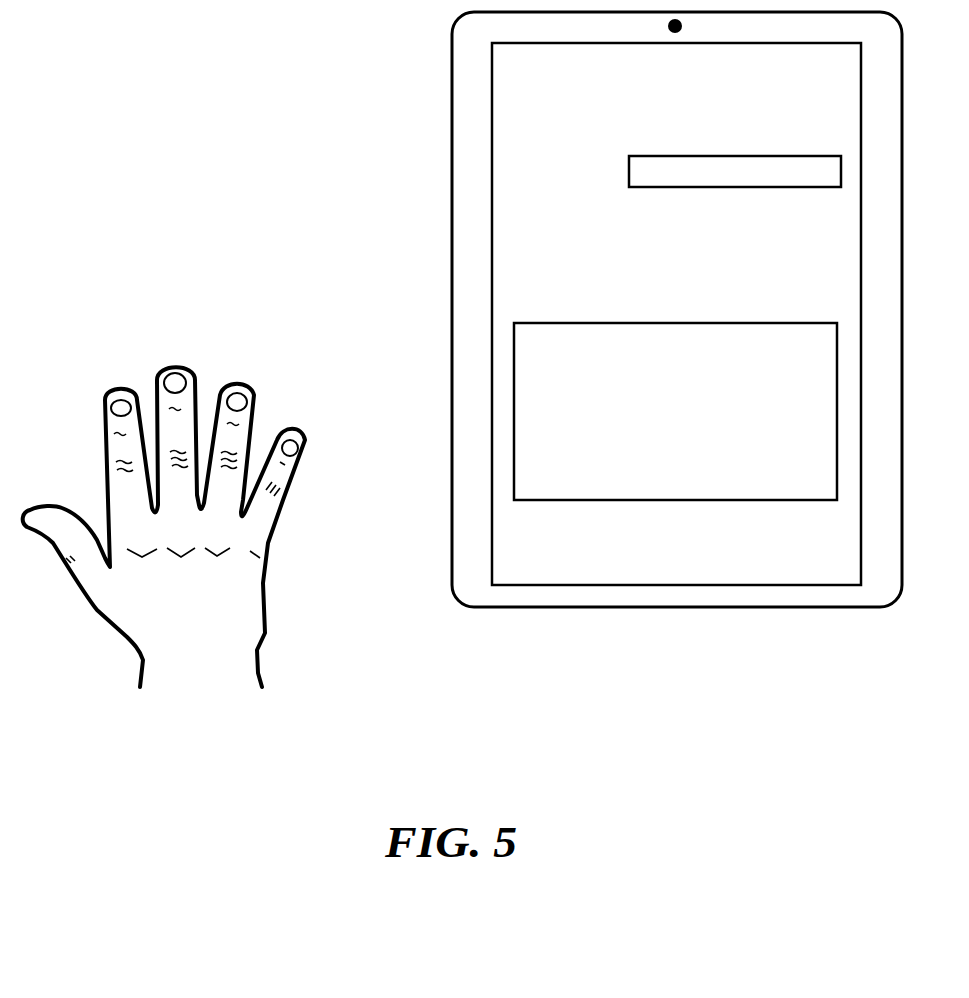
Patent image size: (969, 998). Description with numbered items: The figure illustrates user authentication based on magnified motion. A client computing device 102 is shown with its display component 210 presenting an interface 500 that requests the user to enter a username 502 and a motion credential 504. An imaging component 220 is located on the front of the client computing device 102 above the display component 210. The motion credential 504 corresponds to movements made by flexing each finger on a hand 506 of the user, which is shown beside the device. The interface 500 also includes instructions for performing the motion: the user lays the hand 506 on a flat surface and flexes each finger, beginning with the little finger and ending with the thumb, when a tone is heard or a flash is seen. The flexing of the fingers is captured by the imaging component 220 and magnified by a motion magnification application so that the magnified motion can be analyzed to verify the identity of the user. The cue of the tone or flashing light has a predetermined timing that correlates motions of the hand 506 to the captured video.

The client computing device 102 is at (452, 23).
The display component 210 is at (492, 78).
The imaging component 220 is at (682, 26).
The interface 500 is at (677, 277).
The username 502 is at (644, 155).
The motion credential 504 is at (771, 322).
The hand 506 is at (139, 660).